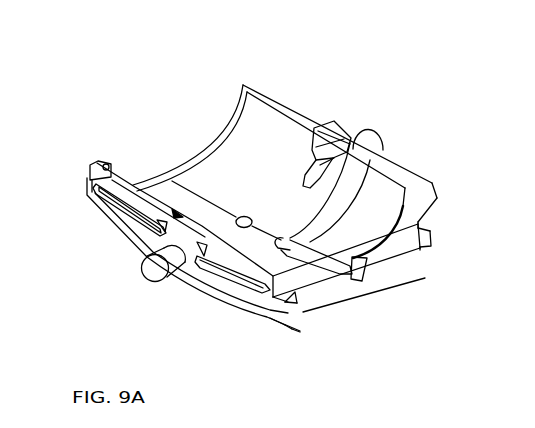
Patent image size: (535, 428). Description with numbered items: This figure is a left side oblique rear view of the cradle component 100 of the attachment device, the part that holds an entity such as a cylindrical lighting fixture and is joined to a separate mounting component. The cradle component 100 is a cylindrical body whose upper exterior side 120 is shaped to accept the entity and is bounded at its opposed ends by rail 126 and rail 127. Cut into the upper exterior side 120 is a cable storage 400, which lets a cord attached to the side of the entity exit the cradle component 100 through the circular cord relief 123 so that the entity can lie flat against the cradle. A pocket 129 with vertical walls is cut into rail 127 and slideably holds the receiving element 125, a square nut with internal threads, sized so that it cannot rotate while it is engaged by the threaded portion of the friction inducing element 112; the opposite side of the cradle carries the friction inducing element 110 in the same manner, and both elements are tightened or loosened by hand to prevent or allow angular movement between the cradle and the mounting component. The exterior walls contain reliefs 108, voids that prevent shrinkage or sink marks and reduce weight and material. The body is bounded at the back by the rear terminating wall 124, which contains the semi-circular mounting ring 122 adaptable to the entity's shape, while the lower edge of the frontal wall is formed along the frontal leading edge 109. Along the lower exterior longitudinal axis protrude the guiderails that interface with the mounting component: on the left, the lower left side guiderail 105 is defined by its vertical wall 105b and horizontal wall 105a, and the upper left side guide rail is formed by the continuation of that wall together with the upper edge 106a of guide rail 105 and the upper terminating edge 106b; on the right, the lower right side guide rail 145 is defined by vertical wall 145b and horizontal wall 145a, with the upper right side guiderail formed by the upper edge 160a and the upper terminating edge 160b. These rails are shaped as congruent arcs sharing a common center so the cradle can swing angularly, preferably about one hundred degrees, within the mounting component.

The cradle component 100 is at (163, 118).
The upper exterior side 120 is at (250, 107).
The rail 127 is at (272, 97).
The receiving element 125 is at (337, 141).
The pocket 129 is at (330, 152).
The friction inducing element 112 is at (378, 124).
The cable storage 400 is at (330, 247).
The rail 126 is at (106, 164).
The reliefs 108 is at (140, 222).
The friction inducing element 110 is at (160, 268).
The rear terminating wall 124 is at (283, 283).
The upper terminating edge 106b is at (431, 211).
The upper edge of guide rail 106a is at (426, 227).
The horizontal wall 105a is at (428, 232).
The lower left side guiderail 105 is at (429, 243).
The vertical wall 105b is at (424, 252).
The semi-circular mounting ring 122 is at (372, 262).
The circular cord relief 123 is at (365, 283).
The frontal leading edge 109 is at (322, 318).
The upper edge of guide rail 160a is at (292, 300).
The upper terminating edge 160b is at (298, 304).
The horizontal wall 145a is at (282, 323).
The lower right side guide rail 145 is at (289, 326).
The vertical wall 145b is at (296, 327).